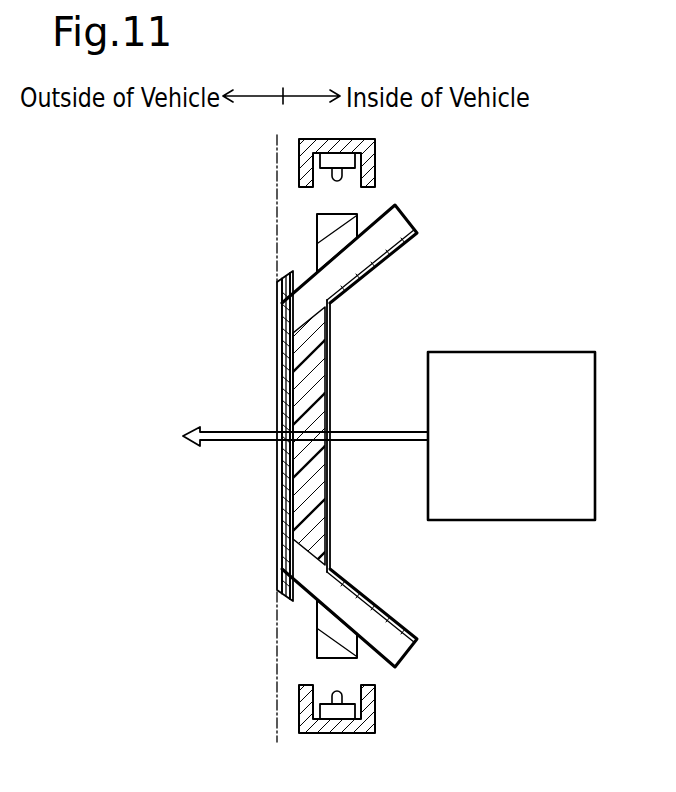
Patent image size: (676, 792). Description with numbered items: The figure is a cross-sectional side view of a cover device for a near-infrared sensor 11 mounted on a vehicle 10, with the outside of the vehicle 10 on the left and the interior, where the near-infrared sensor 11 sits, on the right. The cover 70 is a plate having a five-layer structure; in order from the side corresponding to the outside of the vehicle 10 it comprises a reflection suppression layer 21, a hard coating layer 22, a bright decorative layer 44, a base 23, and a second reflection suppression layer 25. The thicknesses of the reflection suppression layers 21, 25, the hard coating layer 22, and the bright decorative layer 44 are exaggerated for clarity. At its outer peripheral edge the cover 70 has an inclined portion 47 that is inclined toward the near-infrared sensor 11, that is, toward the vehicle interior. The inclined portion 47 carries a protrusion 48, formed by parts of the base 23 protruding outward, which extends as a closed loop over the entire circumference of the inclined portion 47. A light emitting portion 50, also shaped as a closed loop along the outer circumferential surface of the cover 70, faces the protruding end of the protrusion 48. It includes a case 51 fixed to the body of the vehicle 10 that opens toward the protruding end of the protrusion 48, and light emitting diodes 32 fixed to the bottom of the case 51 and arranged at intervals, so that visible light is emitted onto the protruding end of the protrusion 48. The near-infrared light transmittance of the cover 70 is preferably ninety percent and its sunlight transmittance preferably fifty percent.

The vehicle 10 is at (277, 174).
The near-infrared sensor 11 is at (510, 352).
The cover 70 is at (277, 370).
The reflection suppression layer 21 is at (277, 472).
The hard coating layer 22 is at (283, 520).
The bright decorative layer 44 is at (289, 556).
The base 23 is at (318, 480).
The reflection suppression layer 25 is at (330, 535).
The inclined portion 47 is at (392, 253).
The protrusion 48 is at (317, 226).
The light emitting portion 50 is at (388, 430).
The case 51 is at (364, 141).
The light emitting diodes 32 is at (356, 167).